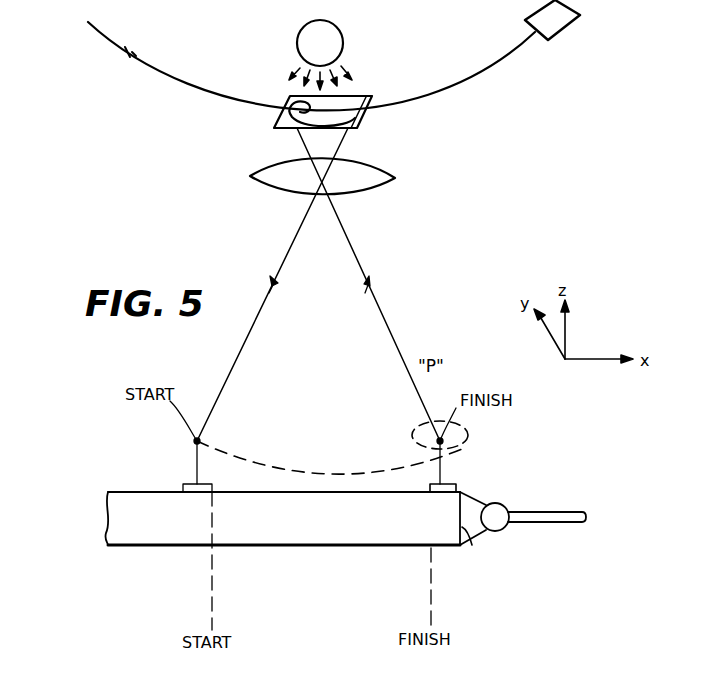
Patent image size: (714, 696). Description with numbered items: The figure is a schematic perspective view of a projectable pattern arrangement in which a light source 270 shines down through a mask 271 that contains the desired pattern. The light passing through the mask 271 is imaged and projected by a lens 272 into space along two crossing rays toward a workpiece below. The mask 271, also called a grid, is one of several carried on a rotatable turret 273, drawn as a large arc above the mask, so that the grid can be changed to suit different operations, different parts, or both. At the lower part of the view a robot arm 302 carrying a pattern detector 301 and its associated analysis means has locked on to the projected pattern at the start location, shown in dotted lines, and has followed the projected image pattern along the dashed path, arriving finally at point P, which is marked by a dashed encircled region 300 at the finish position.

The light source 270 is at (343, 35).
The mask 271 is at (364, 118).
The lens 272 is at (393, 178).
The rotatable turret 273 is at (148, 62).
The finish point region P 300 is at (468, 440).
The pattern detector 301 is at (456, 486).
The robot arm 302 is at (470, 546).